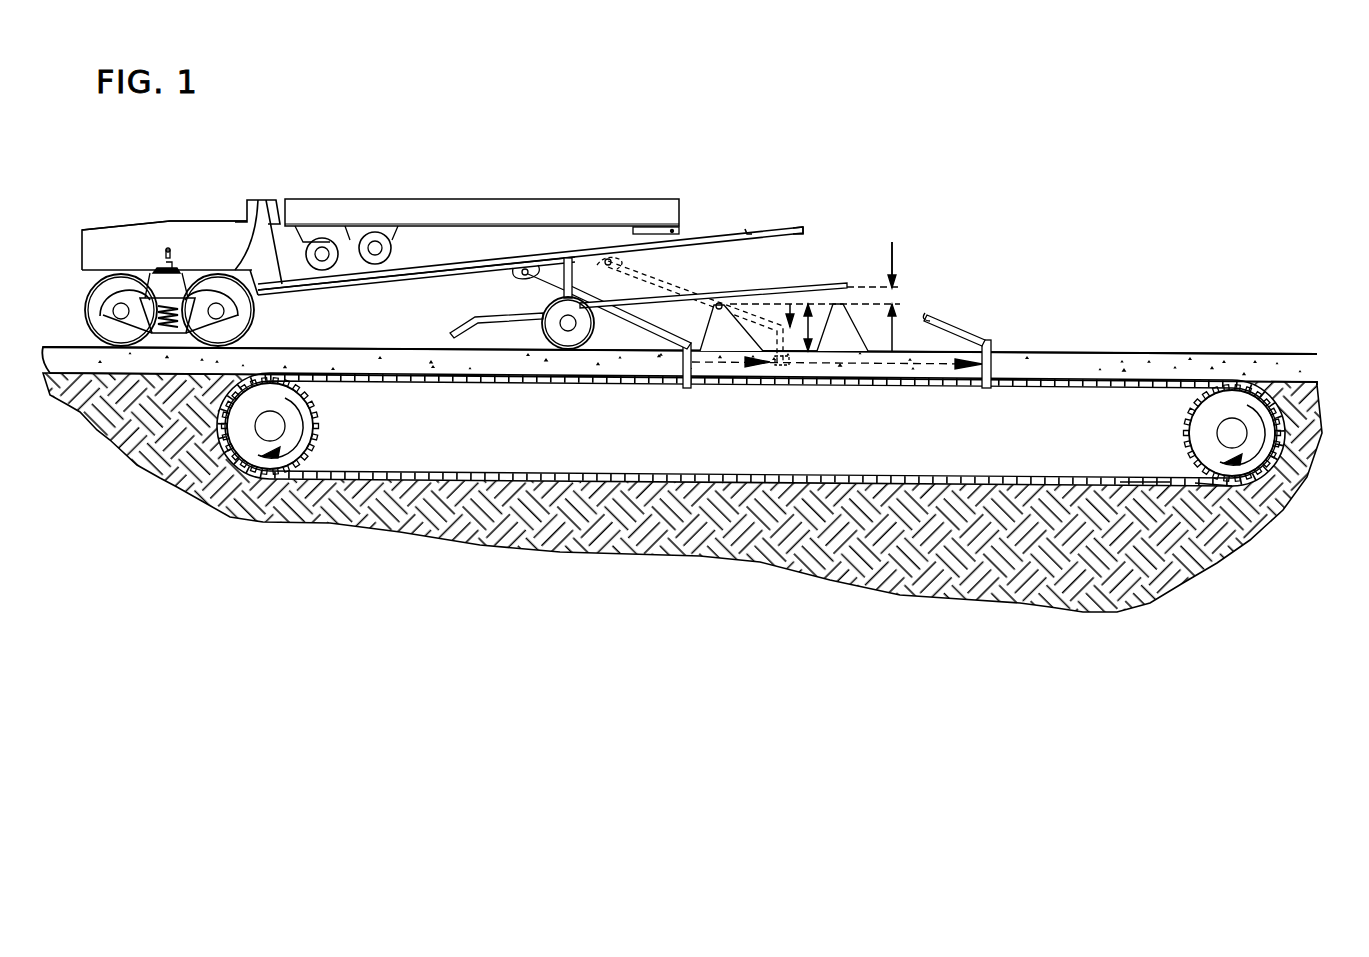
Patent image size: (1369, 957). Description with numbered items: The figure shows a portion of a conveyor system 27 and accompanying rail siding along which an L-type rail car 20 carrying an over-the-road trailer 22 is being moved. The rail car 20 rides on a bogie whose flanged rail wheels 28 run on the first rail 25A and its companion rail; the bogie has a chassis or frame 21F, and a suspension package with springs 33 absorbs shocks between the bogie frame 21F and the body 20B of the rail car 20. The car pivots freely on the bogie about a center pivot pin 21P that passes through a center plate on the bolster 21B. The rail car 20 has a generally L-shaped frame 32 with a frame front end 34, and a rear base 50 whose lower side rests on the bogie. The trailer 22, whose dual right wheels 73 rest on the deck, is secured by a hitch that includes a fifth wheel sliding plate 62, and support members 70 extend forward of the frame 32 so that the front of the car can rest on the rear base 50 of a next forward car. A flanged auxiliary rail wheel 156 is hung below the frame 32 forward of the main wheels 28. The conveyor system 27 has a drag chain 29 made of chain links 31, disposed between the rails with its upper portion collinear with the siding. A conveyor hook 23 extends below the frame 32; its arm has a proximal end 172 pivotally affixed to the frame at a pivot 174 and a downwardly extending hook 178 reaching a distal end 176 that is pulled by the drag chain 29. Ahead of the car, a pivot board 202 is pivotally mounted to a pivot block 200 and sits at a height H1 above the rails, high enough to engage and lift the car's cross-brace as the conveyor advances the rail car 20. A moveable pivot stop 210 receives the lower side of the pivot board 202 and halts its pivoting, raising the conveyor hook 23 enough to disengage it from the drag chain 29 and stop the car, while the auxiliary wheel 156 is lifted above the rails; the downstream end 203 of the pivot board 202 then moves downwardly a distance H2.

The rail car 20 is at (315, 288).
The body of rail car 20B is at (258, 200).
The bolster 21B is at (150, 264).
The bogie chassis or frame 21F is at (108, 302).
The center pivot pin 21P is at (172, 260).
The over-the-road trailer 22 is at (685, 208).
The conveyor hook 23 is at (638, 340).
The first rail 25A is at (1100, 354).
The conveyor system 27 is at (1085, 580).
The flanged rail wheels 28 is at (88, 323).
The drag chain 29 is at (1122, 488).
The chain links 31 is at (1146, 500).
The frame 32 is at (385, 283).
The springs 33 is at (205, 318).
The frame front end 34 is at (748, 229).
The rear base 50 is at (190, 221).
The fifth wheel sliding plate 62 is at (663, 228).
The support members 70 is at (803, 228).
The dual right wheels 73 is at (378, 238).
The flanged auxiliary rail wheel 156 is at (550, 318).
The proximal end of conveyor hook arm 172 is at (568, 258).
The pivot 174 is at (522, 270).
The distal end of hook 176 is at (692, 387).
The downwardly extending hook 178 is at (990, 351).
The pivot block 200 is at (775, 368).
The pivot board 202 is at (770, 295).
The downstream end of pivot board 203 is at (862, 283).
The moveable pivot stop 210 is at (868, 355).
The height H1 is at (805, 315).
The distance H2 is at (895, 292).